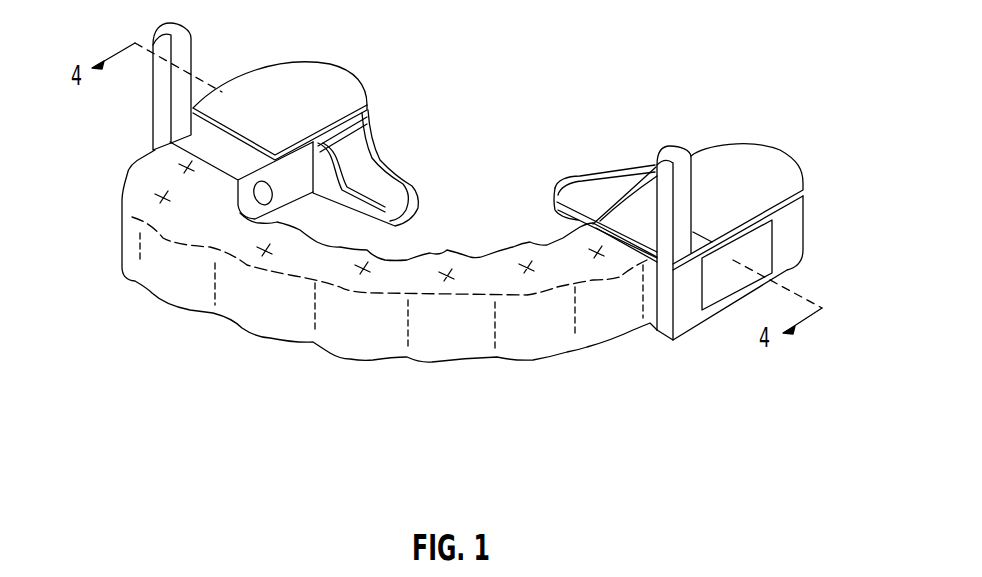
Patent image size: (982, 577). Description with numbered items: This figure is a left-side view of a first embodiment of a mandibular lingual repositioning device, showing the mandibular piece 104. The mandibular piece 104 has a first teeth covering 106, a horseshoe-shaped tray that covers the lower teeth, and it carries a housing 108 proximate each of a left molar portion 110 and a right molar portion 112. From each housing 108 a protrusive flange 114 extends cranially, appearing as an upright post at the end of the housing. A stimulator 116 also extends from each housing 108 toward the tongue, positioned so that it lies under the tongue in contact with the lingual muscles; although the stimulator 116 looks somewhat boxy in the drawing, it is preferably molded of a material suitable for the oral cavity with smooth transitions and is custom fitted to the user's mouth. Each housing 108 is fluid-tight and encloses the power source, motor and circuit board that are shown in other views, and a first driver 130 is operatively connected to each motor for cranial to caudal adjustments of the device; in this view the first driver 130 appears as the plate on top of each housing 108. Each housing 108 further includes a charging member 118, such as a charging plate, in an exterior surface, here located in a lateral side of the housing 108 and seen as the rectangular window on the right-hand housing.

The mandibular piece 104 is at (510, 132).
The first teeth covering 106 is at (125, 197).
The housing 108 is at (370, 125).
The left molar portion 110 is at (565, 237).
The right molar portion 112 is at (228, 188).
The protrusive flange 114 is at (165, 32).
The stimulator 116 is at (392, 187).
The charging member 118 is at (713, 287).
The first driver 130 is at (335, 68).